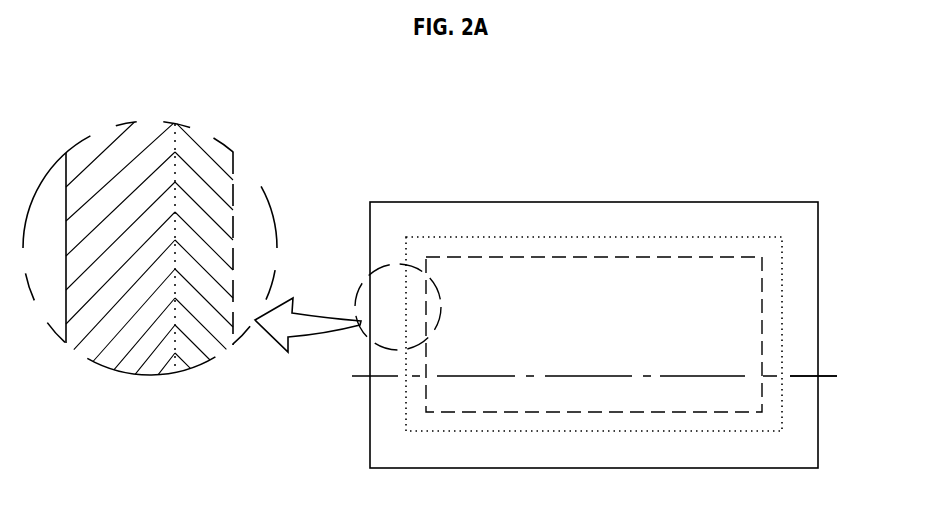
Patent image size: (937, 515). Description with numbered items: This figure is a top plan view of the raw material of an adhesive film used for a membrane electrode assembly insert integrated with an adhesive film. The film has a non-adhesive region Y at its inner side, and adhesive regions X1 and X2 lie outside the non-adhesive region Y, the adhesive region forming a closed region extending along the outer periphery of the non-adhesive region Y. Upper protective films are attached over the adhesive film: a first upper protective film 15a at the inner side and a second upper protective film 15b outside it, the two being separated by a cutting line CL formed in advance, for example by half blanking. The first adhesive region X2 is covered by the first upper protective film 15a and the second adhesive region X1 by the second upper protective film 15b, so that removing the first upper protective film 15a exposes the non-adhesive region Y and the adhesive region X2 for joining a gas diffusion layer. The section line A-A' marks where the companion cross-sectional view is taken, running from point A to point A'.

The second adhesive region X1 is at (120, 155).
The first adhesive region X2 is at (197, 152).
The non-adhesive region Y is at (252, 197).
The first upper protective film 15a is at (747, 315).
The second upper protective film 15b is at (520, 217).
The cutting line CL is at (705, 237).
The line A-A' A is at (586, 378).
The line A- A' is at (823, 378).